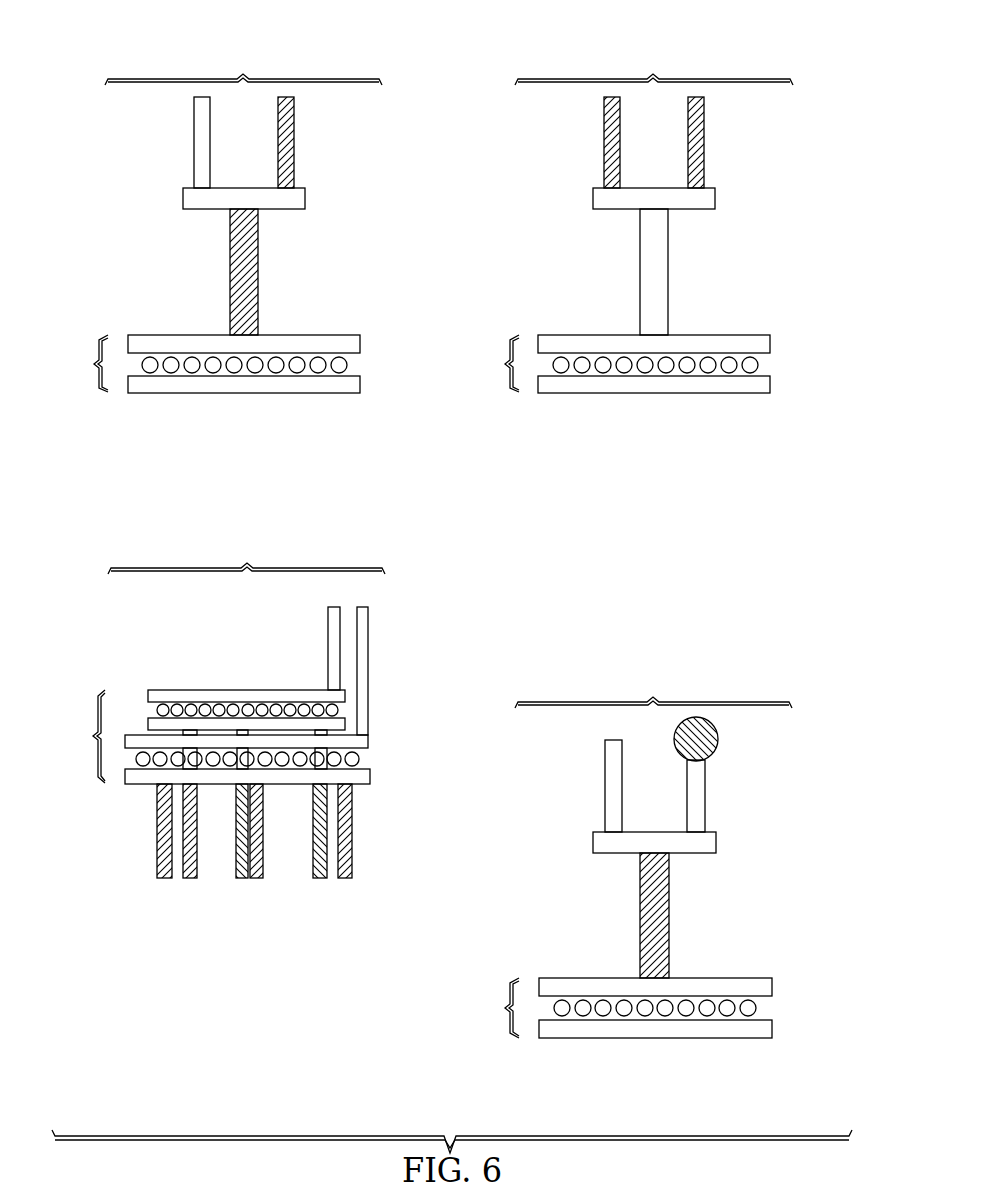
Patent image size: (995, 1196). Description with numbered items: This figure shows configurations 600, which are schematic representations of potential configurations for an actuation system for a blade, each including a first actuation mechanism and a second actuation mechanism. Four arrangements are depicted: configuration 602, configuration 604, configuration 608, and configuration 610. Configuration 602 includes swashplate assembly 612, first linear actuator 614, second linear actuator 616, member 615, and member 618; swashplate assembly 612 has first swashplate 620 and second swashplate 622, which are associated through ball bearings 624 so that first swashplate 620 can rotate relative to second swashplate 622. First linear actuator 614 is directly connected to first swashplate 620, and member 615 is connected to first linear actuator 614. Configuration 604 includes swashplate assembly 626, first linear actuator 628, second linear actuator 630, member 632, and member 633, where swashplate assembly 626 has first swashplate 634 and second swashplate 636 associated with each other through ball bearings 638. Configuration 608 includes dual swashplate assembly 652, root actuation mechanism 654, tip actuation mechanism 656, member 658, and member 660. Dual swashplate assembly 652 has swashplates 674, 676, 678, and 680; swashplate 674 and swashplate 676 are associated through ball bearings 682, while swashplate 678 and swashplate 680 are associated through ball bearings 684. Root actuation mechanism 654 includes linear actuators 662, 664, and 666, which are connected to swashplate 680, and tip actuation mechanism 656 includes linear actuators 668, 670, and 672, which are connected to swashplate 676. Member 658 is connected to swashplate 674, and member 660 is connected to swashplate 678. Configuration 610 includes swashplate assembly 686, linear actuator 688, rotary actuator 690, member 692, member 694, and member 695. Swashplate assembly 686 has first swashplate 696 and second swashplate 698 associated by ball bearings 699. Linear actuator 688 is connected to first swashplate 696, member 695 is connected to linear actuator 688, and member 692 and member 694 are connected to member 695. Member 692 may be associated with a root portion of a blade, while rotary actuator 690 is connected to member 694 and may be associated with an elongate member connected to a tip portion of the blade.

The configurations 600 is at (131, 53).
The configuration 602 is at (243, 66).
The configuration 604 is at (654, 66).
The configuration 608 is at (246, 555).
The configuration 610 is at (653, 689).
The swashplate assembly 612 is at (244, 365).
The first linear actuator 614 is at (230, 265).
The member 615 is at (183, 197).
The second linear actuator 616 is at (294, 143).
The member 618 is at (194, 143).
The first swashplate 620 is at (147, 335).
The second swashplate 622 is at (146, 394).
The ball bearings 624 is at (362, 366).
The swashplate assembly 626 is at (655, 365).
The first linear actuator 628 is at (604, 143).
The second linear actuator 630 is at (704, 143).
The member 632 is at (640, 265).
The member 633 is at (593, 197).
The first swashplate 634 is at (557, 335).
The second swashplate 636 is at (556, 394).
The ball bearings 638 is at (772, 366).
The dual swashplate assembly 652 is at (245, 739).
The root actuation mechanism 654 is at (246, 875).
The tip actuation mechanism 656 is at (197, 862).
The member 658 is at (320, 628).
The member 660 is at (373, 628).
The linear actuator 662 is at (164, 879).
The linear actuator 664 is at (263, 860).
The linear actuator 666 is at (353, 835).
The linear actuator 668 is at (190, 879).
The linear actuator 670 is at (238, 878).
The linear actuator 672 is at (320, 878).
The swashplate 674 is at (208, 690).
The swashplate 676 is at (347, 725).
The swashplate 678 is at (370, 741).
The swashplate 680 is at (137, 785).
The ball bearings 682 is at (142, 710).
The ball bearings 684 is at (372, 759).
The swashplate assembly 686 is at (655, 1008).
The linear actuator 688 is at (640, 903).
The rotary actuator 690 is at (718, 742).
The member 692 is at (605, 785).
The member 694 is at (705, 785).
The member 695 is at (593, 843).
The first swashplate 696 is at (557, 978).
The second swashplate 698 is at (557, 1039).
The ball bearings 699 is at (774, 1009).